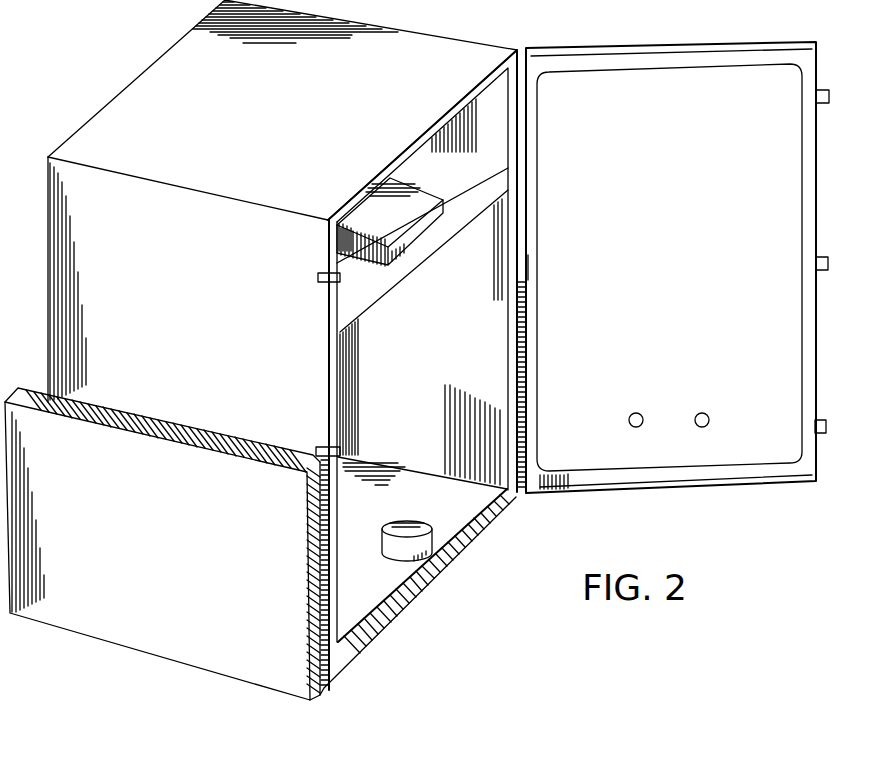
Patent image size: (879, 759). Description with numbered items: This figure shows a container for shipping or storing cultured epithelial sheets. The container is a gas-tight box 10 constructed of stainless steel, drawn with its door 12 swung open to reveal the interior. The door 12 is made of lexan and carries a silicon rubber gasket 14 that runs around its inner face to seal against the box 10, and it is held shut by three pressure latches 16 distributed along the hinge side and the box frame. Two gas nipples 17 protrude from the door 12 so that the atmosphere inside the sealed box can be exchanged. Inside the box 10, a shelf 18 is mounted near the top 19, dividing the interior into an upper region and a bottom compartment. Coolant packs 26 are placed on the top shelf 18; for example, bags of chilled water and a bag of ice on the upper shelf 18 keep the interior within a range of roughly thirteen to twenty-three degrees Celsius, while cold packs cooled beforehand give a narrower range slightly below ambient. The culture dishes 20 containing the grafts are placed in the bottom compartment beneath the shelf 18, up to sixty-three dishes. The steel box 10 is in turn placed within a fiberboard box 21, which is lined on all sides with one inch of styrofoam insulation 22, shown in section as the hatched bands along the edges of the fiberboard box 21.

The gas-tight box 10 is at (128, 77).
The door 12 is at (680, 276).
The silicon rubber gasket 14 is at (748, 55).
The pressure latches 16 is at (318, 447).
The gas nipples 17 is at (643, 414).
The shelf 18 is at (428, 251).
The top 19 is at (301, 123).
The culture dishes 20 is at (421, 528).
The fiberboard box 21 is at (187, 566).
The styrofoam insulation 22 is at (132, 404).
The coolant packs 26 is at (428, 203).